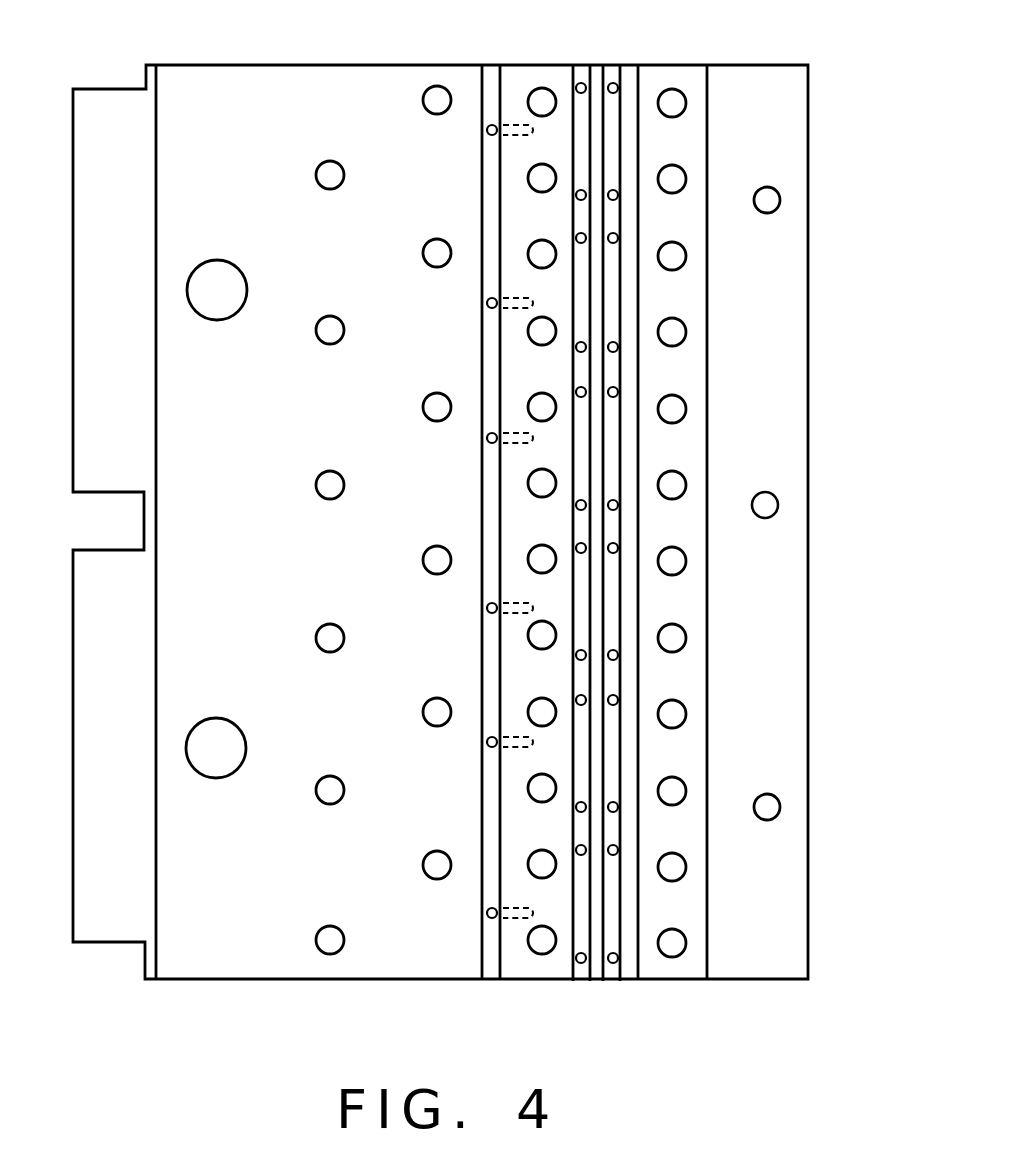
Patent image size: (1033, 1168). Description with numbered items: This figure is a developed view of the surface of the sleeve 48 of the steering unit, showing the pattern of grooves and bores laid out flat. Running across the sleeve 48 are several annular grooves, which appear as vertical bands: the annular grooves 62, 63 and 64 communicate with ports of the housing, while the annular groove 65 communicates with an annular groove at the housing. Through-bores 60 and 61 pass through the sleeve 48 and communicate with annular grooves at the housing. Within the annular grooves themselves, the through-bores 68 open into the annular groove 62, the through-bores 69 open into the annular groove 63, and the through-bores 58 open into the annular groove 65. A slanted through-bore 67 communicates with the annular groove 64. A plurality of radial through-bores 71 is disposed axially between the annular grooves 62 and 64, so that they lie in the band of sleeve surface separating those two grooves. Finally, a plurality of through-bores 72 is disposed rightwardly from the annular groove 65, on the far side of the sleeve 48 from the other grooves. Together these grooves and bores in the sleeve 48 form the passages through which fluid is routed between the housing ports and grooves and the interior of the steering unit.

The sleeve 48 is at (238, 90).
The through-bores 58 is at (678, 255).
The through-bores 60 is at (433, 100).
The through-bores 61 is at (324, 184).
The annular groove 62 is at (582, 74).
The annular groove 63 is at (615, 74).
The annular groove 64 is at (491, 78).
The annular groove 65 is at (688, 78).
The slanted through-bore 67 is at (488, 303).
The through-bores 68 is at (579, 701).
The through-bores 69 is at (615, 503).
The radial through-bores 71 is at (540, 256).
The through-bores 72 is at (770, 198).